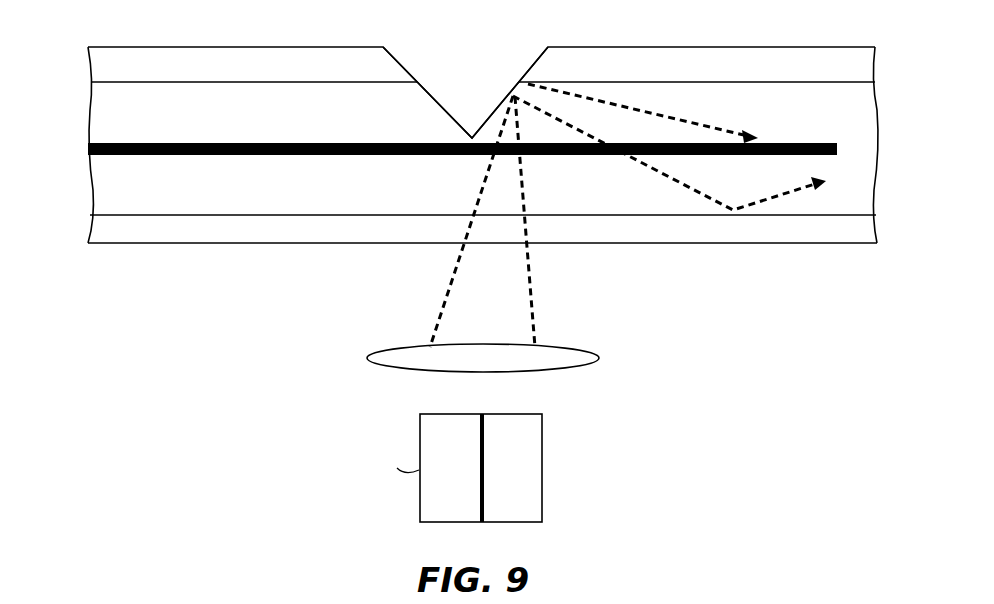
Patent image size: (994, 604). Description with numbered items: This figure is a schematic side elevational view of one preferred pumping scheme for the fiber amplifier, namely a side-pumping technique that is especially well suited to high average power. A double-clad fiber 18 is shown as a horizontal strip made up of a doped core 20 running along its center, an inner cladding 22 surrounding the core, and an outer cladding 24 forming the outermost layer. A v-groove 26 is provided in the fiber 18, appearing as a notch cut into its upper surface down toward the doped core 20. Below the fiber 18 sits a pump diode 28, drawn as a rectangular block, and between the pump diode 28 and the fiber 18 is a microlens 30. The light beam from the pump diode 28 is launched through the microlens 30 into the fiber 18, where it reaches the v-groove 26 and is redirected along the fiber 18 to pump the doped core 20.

The fiber 18 is at (450, 172).
The doped core 20 is at (372, 155).
The inner cladding 22 is at (117, 178).
The outer cladding 24 is at (148, 234).
The v-groove 26 is at (440, 100).
The pump diode 28 is at (545, 497).
The microlens 30 is at (560, 348).